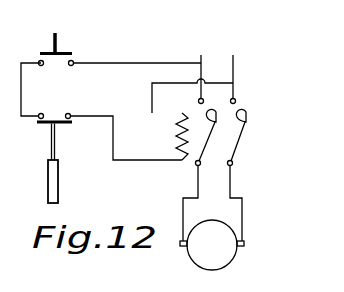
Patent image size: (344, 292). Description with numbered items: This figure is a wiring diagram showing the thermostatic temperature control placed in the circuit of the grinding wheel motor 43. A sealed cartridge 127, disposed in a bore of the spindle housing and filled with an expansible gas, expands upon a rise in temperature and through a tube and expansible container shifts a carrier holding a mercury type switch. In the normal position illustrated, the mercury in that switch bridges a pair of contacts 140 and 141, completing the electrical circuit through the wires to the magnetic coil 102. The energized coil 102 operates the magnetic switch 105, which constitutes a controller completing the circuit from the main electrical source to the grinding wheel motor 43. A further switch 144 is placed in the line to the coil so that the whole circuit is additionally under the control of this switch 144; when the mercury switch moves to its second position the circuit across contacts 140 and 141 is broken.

The switch 144 is at (63, 52).
The contact 140 is at (35, 99).
The contact 141 is at (74, 99).
The sealed cartridge 127 is at (59, 198).
The magnetic coil 102 is at (177, 134).
The magnetic switch 105 is at (247, 110).
The grinding wheel motor 43 is at (232, 262).